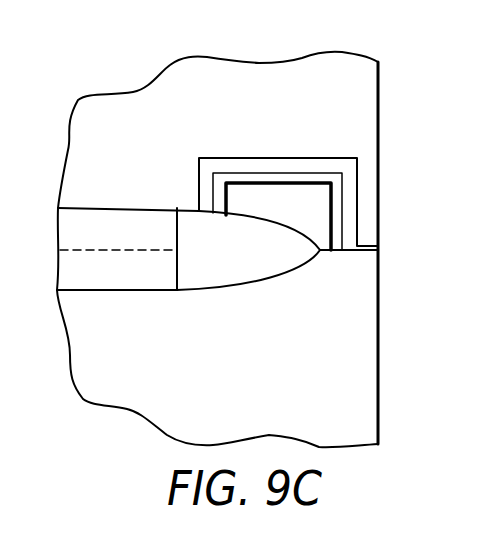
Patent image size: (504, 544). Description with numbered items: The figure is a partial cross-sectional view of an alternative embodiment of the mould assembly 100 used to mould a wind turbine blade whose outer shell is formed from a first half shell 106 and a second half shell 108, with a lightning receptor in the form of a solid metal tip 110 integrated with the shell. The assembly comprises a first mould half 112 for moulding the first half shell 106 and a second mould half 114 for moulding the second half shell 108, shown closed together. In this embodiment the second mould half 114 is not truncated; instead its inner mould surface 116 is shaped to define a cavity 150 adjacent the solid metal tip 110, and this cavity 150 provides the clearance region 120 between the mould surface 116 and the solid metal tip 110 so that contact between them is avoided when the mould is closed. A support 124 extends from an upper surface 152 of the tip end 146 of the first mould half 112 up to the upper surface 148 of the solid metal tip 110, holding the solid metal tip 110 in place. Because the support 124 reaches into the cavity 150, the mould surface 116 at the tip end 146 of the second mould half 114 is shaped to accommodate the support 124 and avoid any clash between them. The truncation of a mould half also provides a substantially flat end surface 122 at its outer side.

The mould assembly 100 is at (82, 74).
The first half shell 106 is at (97, 282).
The second half shell 108 is at (97, 220).
The solid metal tip 110 is at (221, 270).
The first mould half 112 is at (222, 412).
The second mould half 114 is at (220, 111).
The inner mould surface 116 is at (268, 158).
The clearance region 120 is at (325, 170).
The flat end surface 122 is at (378, 405).
The support 124 is at (342, 207).
The tip end 146 is at (352, 343).
The upper surface of the solid metal tip 148 is at (252, 211).
The cavity 150 is at (292, 210).
The upper surface of the tip end 152 is at (337, 252).